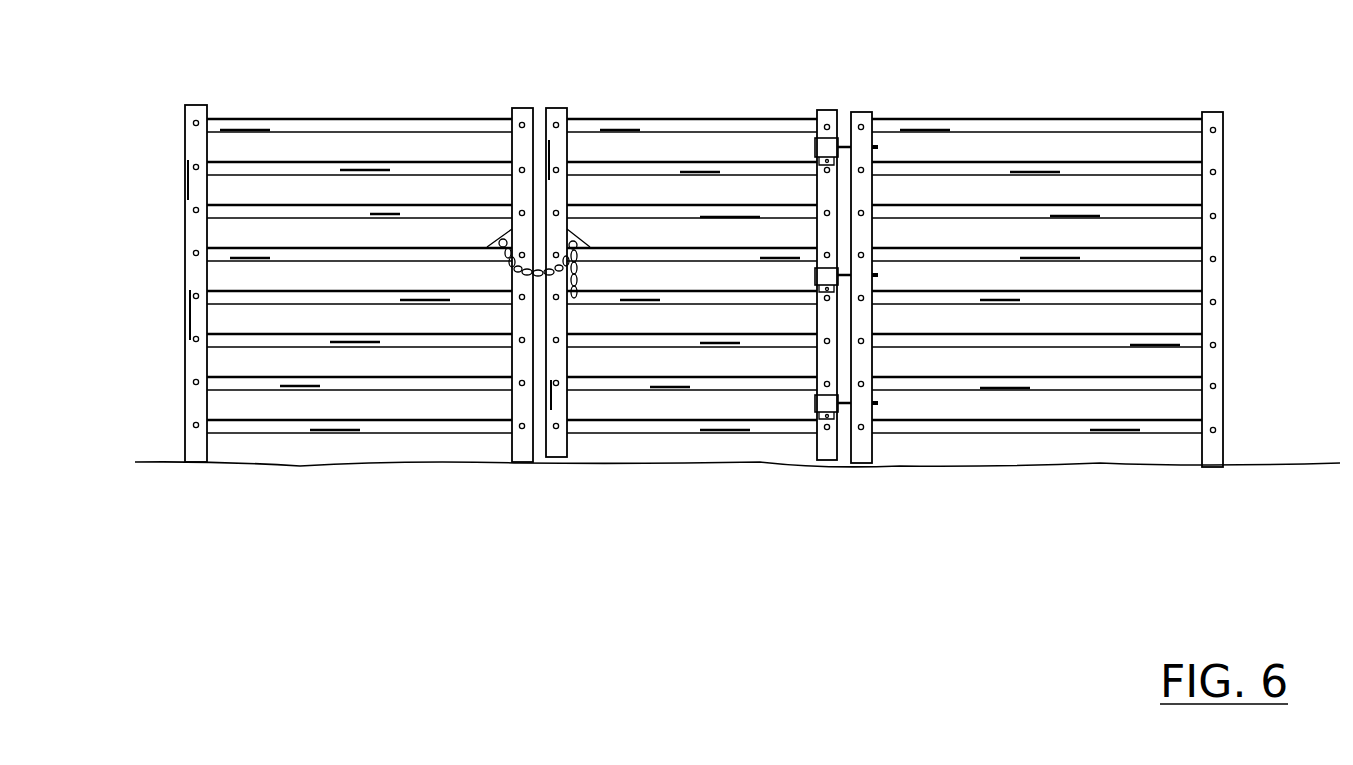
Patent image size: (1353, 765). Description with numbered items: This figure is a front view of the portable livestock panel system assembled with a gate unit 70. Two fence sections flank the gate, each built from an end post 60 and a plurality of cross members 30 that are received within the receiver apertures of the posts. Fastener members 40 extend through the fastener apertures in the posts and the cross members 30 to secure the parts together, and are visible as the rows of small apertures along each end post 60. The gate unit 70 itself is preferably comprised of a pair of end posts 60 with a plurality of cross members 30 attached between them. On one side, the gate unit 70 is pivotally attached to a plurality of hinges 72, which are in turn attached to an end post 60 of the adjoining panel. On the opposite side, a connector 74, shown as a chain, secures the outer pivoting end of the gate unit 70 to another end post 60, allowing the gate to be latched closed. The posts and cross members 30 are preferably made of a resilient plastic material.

The cross member 30 is at (313, 120).
The fastener member 40 is at (194, 210).
The end post 60 is at (187, 317).
The gate unit 70 is at (716, 120).
The hinge 72 is at (835, 143).
The connector 74 is at (590, 250).